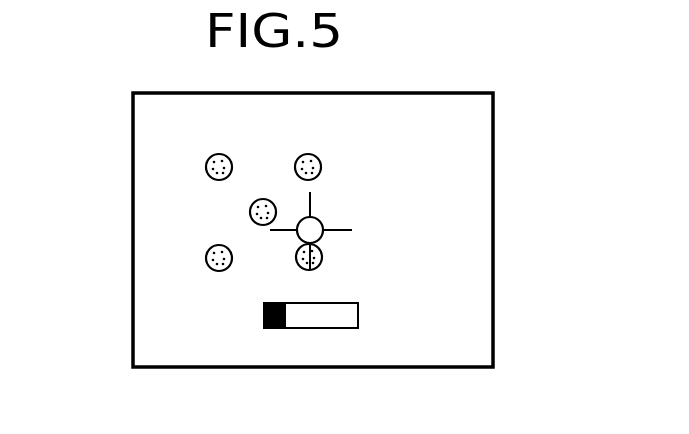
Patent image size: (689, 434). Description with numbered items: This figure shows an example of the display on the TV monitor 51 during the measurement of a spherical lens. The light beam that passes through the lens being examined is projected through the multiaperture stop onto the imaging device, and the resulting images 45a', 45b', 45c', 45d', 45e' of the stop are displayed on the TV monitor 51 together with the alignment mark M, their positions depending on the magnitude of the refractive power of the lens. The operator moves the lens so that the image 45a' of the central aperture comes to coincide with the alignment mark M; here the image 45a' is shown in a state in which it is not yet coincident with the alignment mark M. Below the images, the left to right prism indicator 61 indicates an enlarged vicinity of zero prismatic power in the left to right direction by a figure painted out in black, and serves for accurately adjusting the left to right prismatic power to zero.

The TV monitor 51 is at (131, 338).
The image of the aperture 45a 45a' is at (155, 202).
The image of the multiaperture stop 45b' is at (440, 141).
The image of the multiaperture stop 45c' is at (433, 276).
The image of the multiaperture stop 45d' is at (140, 278).
The image of the multiaperture stop 45e' is at (145, 134).
The alignment mark M is at (316, 199).
The left to right prism indicator 61 is at (358, 313).